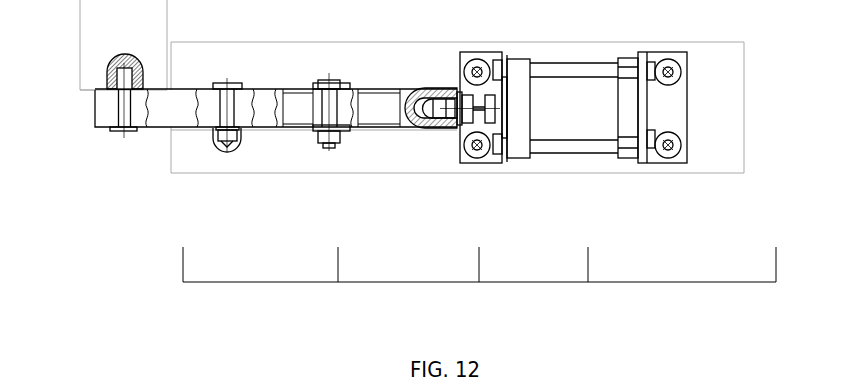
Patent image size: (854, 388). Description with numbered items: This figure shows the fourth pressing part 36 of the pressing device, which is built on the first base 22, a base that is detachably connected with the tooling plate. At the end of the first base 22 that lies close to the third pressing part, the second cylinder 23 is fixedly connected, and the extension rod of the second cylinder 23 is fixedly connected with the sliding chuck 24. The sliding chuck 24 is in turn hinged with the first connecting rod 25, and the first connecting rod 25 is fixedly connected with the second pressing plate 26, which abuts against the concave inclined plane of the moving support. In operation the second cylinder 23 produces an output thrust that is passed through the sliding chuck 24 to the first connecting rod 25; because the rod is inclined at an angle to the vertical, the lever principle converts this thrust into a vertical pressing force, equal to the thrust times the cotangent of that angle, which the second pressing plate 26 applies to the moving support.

The first base 22 is at (708, 148).
The second cylinder 23 is at (518, 132).
The sliding chuck 24 is at (408, 122).
The first connecting rod 25 is at (263, 110).
The second pressing plate 26 is at (90, 67).
The fourth pressing part 36 is at (479, 295).